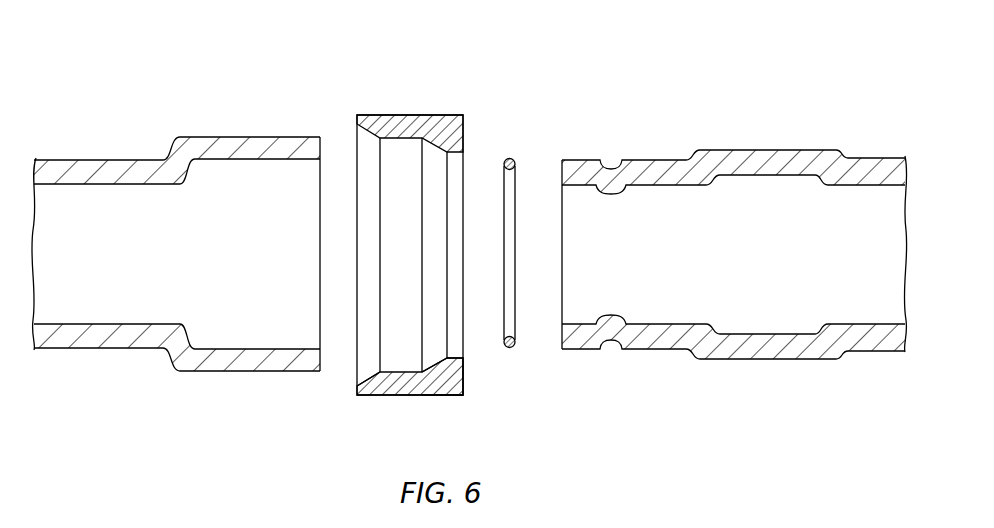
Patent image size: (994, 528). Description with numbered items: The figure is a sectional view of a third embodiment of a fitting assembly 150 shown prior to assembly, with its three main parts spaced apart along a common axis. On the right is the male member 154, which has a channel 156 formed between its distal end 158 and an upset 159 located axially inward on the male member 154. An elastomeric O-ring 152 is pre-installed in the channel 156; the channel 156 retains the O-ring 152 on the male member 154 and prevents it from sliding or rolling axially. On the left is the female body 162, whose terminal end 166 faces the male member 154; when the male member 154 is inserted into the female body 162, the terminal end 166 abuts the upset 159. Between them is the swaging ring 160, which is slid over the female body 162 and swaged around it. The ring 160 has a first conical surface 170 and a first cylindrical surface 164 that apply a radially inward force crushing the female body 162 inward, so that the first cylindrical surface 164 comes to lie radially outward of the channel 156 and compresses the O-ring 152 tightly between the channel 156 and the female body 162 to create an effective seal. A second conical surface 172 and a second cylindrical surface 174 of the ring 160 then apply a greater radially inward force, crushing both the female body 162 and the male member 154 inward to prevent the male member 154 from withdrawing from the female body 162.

The fitting assembly 150 is at (495, 76).
The O-ring 152 is at (512, 157).
The male member 154 is at (654, 155).
The channel 156 is at (608, 162).
The distal end 158 is at (562, 159).
The upset 159 is at (748, 151).
The swaging ring 160 is at (403, 112).
The female body 162 is at (254, 128).
The first cylindrical surface 164 is at (396, 368).
The terminal end 166 is at (320, 132).
The first conical surface 170 is at (372, 384).
The second conical surface 172 is at (452, 391).
The second cylindrical surface 174 is at (455, 357).